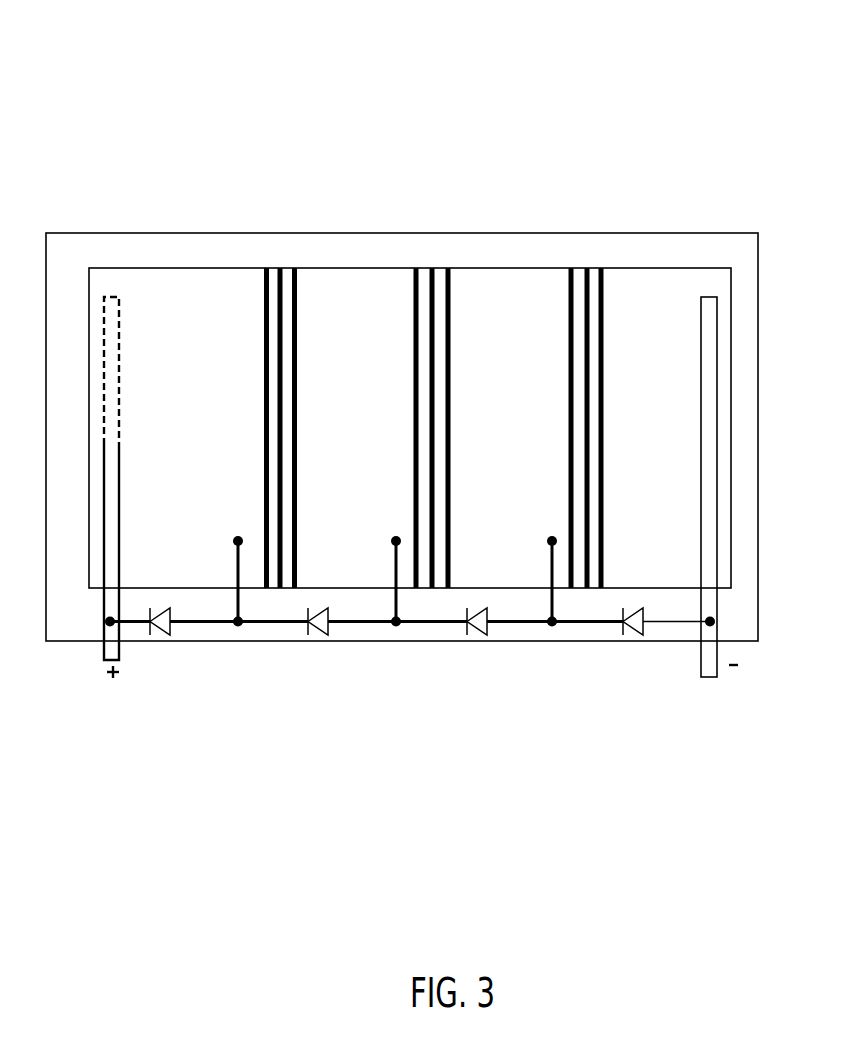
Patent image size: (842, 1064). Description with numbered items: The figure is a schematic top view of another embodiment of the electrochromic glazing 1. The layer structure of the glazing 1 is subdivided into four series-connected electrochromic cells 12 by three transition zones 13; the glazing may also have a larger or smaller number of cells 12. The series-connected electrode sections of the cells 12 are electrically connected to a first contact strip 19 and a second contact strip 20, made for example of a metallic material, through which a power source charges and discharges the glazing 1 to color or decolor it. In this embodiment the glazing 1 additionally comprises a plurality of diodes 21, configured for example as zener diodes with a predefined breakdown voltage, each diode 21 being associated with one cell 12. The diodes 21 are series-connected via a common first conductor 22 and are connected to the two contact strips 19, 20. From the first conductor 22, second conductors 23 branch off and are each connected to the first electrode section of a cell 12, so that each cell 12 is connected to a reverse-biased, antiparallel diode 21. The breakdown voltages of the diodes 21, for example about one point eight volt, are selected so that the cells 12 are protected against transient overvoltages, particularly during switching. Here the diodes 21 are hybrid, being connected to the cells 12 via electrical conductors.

The electrochromic glazing 1 is at (183, 120).
The electrochromic cell 12 is at (208, 428).
The transition zone 13 is at (276, 252).
The first contact strip 19 is at (103, 637).
The second contact strip 20 is at (708, 678).
The diode 21 is at (162, 634).
The first conductor 22 is at (367, 624).
The second conductor 23 is at (236, 566).